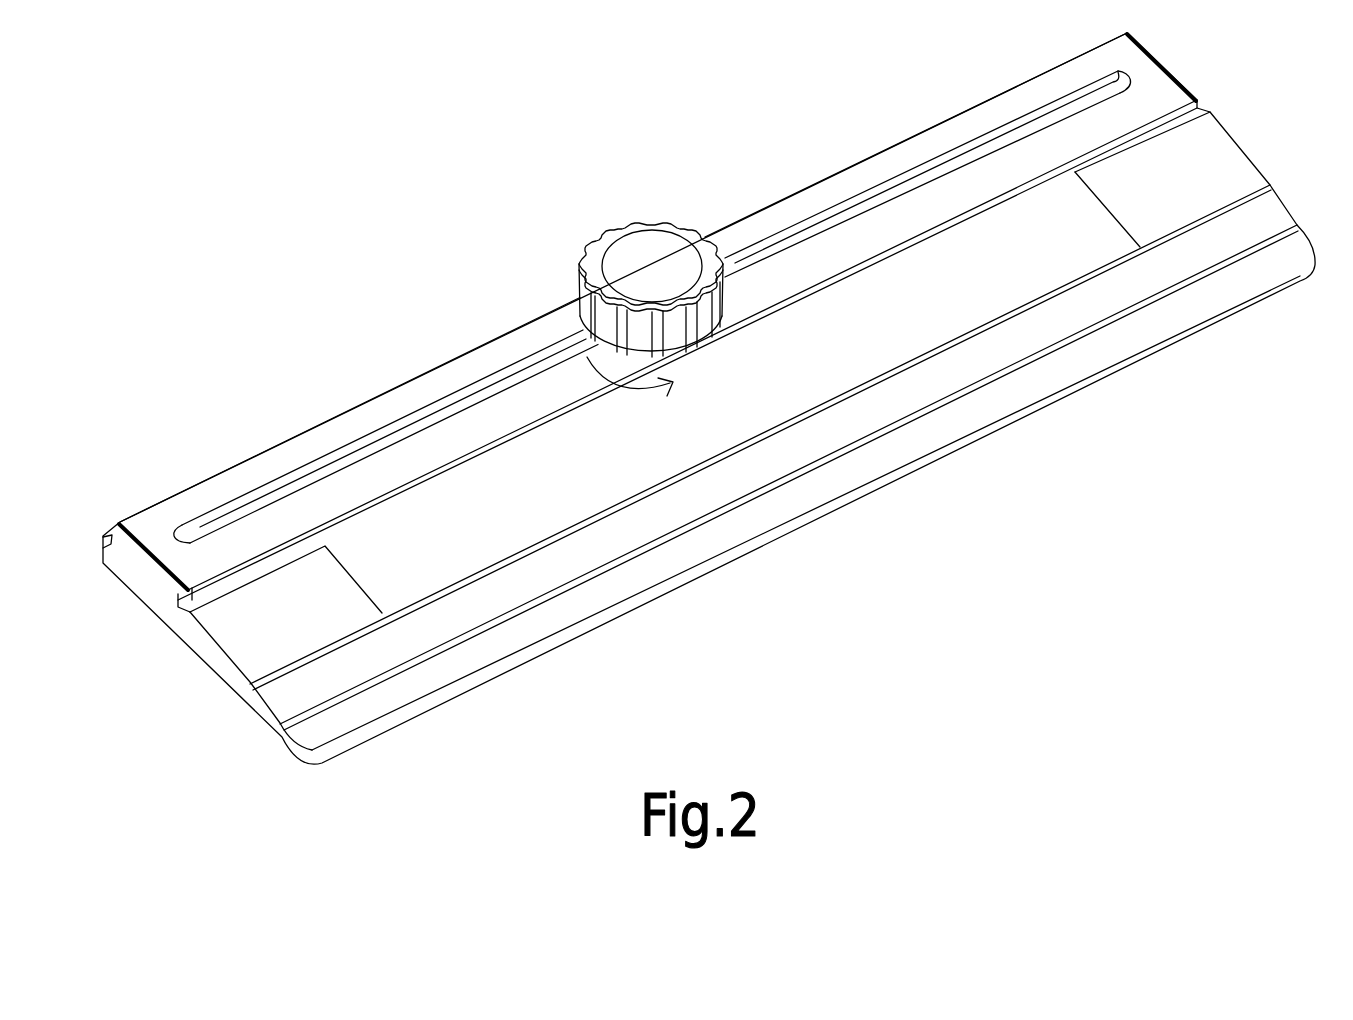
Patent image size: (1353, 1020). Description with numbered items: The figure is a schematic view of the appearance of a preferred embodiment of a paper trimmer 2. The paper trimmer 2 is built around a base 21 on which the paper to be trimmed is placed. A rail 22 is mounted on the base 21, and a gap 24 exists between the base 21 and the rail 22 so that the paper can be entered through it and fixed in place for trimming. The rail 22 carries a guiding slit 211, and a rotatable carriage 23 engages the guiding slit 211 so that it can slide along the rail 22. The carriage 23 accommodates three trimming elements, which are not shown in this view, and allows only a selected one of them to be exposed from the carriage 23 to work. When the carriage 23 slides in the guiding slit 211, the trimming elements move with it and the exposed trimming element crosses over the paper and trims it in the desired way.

The paper trimmer 2 is at (709, 398).
The base 21 is at (233, 673).
The rail 22 is at (983, 123).
The rotatable carriage 23 is at (635, 257).
The gap 24 is at (392, 493).
The guiding slit 211 is at (840, 220).